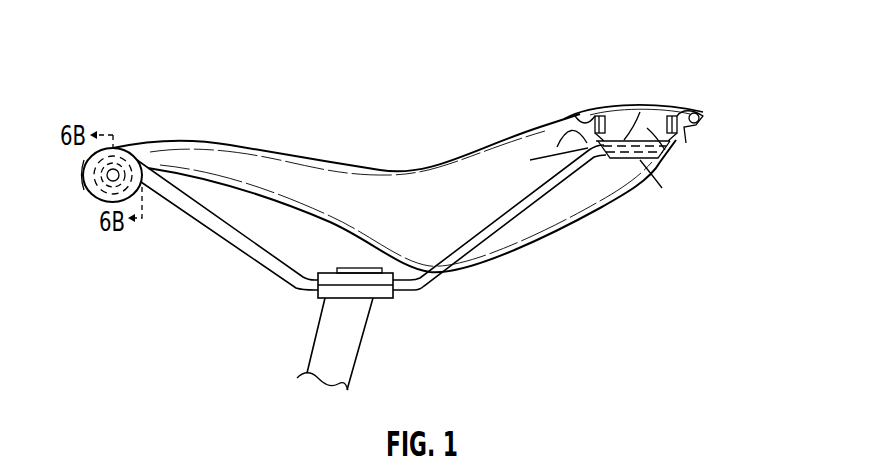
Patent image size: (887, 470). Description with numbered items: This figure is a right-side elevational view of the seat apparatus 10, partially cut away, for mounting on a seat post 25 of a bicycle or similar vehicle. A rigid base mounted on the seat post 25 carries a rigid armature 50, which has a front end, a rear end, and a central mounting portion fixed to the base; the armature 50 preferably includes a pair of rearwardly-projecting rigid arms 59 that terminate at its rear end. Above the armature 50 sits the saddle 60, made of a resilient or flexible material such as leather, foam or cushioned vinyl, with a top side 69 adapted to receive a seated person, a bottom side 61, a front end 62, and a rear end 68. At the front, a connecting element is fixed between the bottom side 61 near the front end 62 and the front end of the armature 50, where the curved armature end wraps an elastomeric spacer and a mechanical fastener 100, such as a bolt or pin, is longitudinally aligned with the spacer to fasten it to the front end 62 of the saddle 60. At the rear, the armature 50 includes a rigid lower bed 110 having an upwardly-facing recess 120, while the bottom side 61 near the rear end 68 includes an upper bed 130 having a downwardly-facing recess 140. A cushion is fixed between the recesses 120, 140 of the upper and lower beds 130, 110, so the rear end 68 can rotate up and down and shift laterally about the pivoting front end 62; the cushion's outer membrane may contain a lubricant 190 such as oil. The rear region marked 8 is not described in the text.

The seat apparatus 10 is at (722, 36).
The rear portion of saddle 8 is at (565, 118).
The seat post 25 is at (343, 340).
The armature 50 is at (263, 250).
The rearwardly-projecting rigid arms 59 is at (645, 158).
The saddle 60 is at (354, 163).
The bottom side 61 is at (495, 280).
The front end 62 is at (82, 178).
The rear end 68 is at (645, 137).
The top side 69 is at (252, 148).
The mechanical fastener 100 is at (100, 176).
The lower bed 110 is at (663, 157).
The upwardly-facing recess 120 is at (703, 108).
The upper bed 130 is at (617, 106).
The downwardly-facing recess 140 is at (609, 157).
The lubricant 190 is at (640, 124).